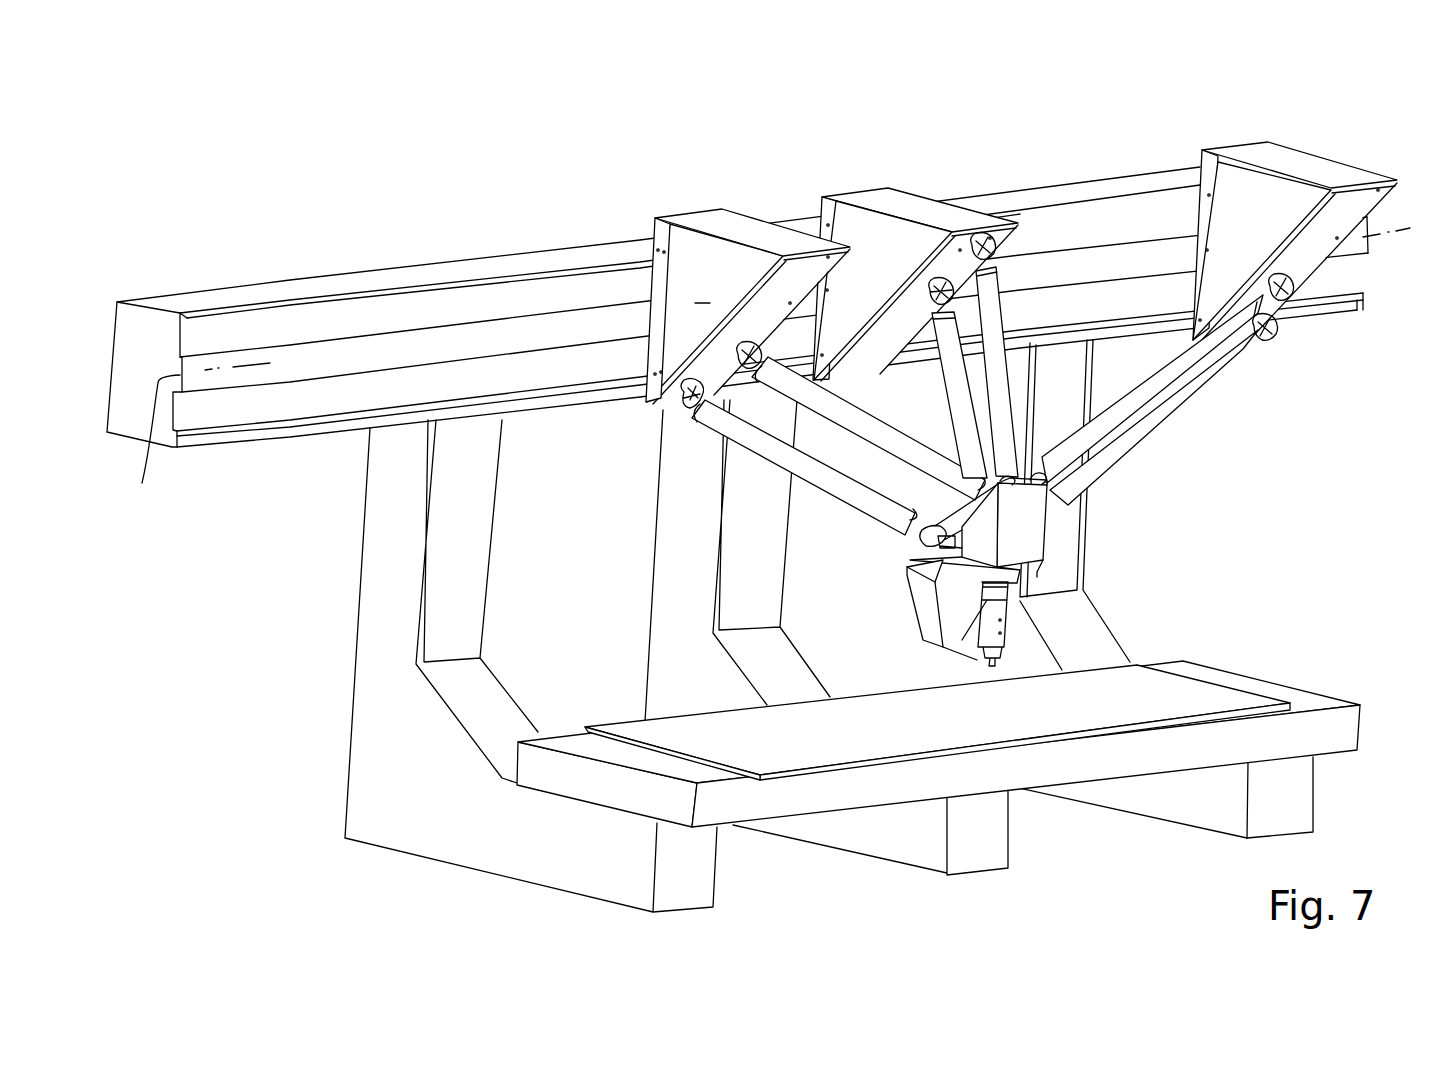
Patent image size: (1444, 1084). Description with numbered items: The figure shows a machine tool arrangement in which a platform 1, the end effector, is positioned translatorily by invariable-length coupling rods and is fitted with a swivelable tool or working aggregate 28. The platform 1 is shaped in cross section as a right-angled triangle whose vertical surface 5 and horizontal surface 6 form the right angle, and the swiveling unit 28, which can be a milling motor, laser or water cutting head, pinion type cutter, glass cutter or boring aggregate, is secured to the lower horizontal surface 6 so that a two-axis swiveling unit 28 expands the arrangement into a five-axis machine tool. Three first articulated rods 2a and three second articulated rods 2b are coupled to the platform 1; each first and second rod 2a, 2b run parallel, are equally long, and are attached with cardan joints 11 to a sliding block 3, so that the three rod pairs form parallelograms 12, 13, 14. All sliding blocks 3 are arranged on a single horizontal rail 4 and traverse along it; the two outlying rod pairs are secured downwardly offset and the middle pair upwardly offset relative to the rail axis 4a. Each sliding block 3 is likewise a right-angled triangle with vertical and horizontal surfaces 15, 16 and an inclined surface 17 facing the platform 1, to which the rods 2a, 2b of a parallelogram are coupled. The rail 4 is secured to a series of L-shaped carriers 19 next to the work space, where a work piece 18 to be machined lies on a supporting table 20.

The platform 1 is at (1061, 538).
The first articulated rod 2a is at (1023, 297).
The second articulated rod 2b is at (950, 390).
The sliding block 3 is at (907, 198).
The rail 4 is at (353, 283).
The rail axis 4a is at (1423, 227).
The vertical surface 5 is at (1030, 548).
The horizontal surface 6 is at (1035, 562).
The cardan joint 11 is at (672, 410).
The parallelogram 12 is at (853, 420).
The parallelogram 13 is at (947, 365).
The parallelogram 14 is at (1200, 353).
The vertical surface of sliding block 15 is at (650, 240).
The horizontal surface of sliding block 16 is at (733, 230).
The inclined surface of sliding block 17 is at (780, 283).
The work piece 18 is at (918, 737).
The L-shaped carrier 19 is at (427, 819).
The supporting table 20 is at (800, 800).
The swivelable working aggregate 28 is at (925, 618).